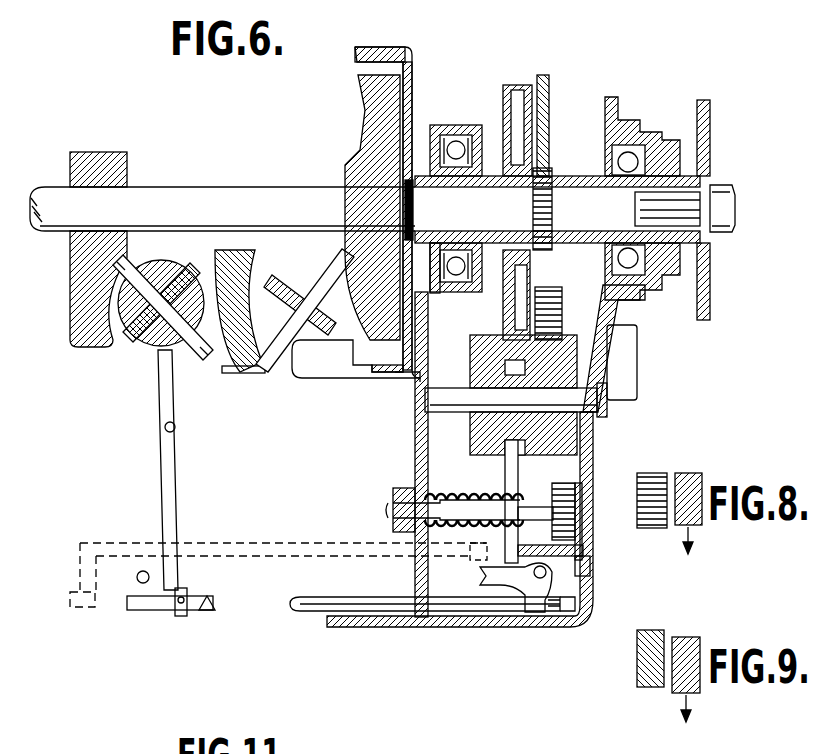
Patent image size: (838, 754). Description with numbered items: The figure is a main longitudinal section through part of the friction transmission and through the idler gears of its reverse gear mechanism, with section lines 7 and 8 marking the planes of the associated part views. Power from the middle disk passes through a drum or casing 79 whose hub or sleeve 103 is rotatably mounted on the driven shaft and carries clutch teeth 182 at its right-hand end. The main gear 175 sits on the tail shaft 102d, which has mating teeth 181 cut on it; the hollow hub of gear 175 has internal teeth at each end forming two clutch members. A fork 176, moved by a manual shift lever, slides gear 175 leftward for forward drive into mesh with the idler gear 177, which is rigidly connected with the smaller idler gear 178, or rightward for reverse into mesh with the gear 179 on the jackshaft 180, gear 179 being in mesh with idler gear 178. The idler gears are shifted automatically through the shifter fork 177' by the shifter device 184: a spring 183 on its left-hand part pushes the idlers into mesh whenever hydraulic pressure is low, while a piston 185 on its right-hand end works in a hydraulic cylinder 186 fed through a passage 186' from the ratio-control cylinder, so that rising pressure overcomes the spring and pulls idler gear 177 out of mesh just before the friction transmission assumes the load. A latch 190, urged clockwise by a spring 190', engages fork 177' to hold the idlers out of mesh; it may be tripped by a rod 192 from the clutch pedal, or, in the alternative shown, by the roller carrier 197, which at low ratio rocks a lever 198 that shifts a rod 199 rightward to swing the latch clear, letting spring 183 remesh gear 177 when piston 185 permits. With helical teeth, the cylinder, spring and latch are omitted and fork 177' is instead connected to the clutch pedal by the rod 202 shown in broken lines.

In FIG. 6, the drum 79 is at (373, 47).
In FIG. 6, the section line 7— 7 is at (535, 80).
In FIG. 6, the section line 8— 8 is at (455, 330).
In FIG. 6, the main gear 175 is at (506, 112).
In FIG. 8, the main gear 175 is at (697, 486).
In FIG. 9, the main gear 175 is at (697, 655).
In FIG. 6, the fork 176 is at (550, 96).
In FIG. 6, the teeth 182 is at (488, 170).
In FIG. 6, the mating teeth 181 is at (553, 170).
In FIG. 6, the tail shaft 102d is at (680, 198).
In FIG. 6, the sleeve 103 is at (465, 249).
In FIG. 6, the idler gear 177 is at (523, 319).
In FIG. 8, the idler gear 177 is at (658, 488).
In FIG. 9, the idler gear 177 is at (658, 645).
In FIG. 6, the gear 179 is at (602, 309).
In FIG. 6, the idler gear 178 is at (600, 362).
In FIG. 6, the shifter fork 177' is at (504, 487).
In FIG. 6, the spring 183 is at (462, 493).
In FIG. 6, the shifter device 184 is at (392, 510).
In FIG. 6, the hydraulic cylinder 186 is at (579, 521).
In FIG. 6, the piston 185 is at (578, 534).
In FIG. 6, the passage 186' is at (606, 576).
In FIG. 6, the latch 190 is at (530, 617).
In FIG. 6, the spring 190' is at (590, 625).
In FIG. 6, the rod 192 is at (314, 603).
In FIG. 6, the roller carrier 197 is at (157, 353).
In FIG. 6, the lever 198 is at (175, 466).
In FIG. 6, the rod 199 is at (193, 608).
In FIG. 6, the rod 202 is at (288, 540).
In FIG. 6, the jackshaft 180 is at (322, 370).